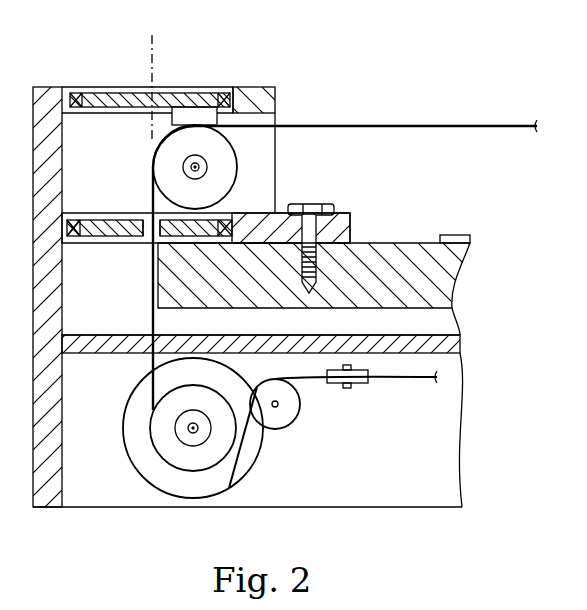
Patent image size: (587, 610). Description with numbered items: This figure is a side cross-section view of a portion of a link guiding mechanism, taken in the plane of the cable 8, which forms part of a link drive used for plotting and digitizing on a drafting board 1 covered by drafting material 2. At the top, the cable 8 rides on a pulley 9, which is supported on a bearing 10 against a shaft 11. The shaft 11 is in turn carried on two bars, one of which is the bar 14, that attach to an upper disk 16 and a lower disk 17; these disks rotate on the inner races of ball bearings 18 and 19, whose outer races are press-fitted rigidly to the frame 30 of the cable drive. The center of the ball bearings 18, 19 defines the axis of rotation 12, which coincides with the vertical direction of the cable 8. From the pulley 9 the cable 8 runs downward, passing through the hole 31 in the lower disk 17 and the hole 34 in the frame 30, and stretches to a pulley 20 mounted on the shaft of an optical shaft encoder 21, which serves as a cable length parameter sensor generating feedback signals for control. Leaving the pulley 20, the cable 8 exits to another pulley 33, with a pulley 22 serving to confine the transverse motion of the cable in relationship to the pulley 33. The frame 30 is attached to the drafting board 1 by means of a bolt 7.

The drafting board 1 is at (445, 290).
The drafting material 2 is at (455, 236).
The bolt 7 is at (312, 205).
The cable 8 is at (499, 129).
The pulley 9 is at (238, 182).
The bearing 10 is at (168, 160).
The shaft 11 is at (196, 167).
The axis of rotation 12 is at (152, 42).
The bar 14 is at (196, 116).
The upper disk 16 is at (106, 93).
The lower disk 17 is at (88, 238).
The ball bearing 18 is at (230, 98).
The ball bearing 19 is at (75, 225).
The pulley 20 is at (207, 412).
The optical shaft encoder 21 is at (135, 452).
The pulley 22 is at (355, 388).
The frame 30 is at (47, 95).
The hole 31 is at (148, 236).
The pulley 33 is at (290, 418).
The hole 34 is at (141, 354).